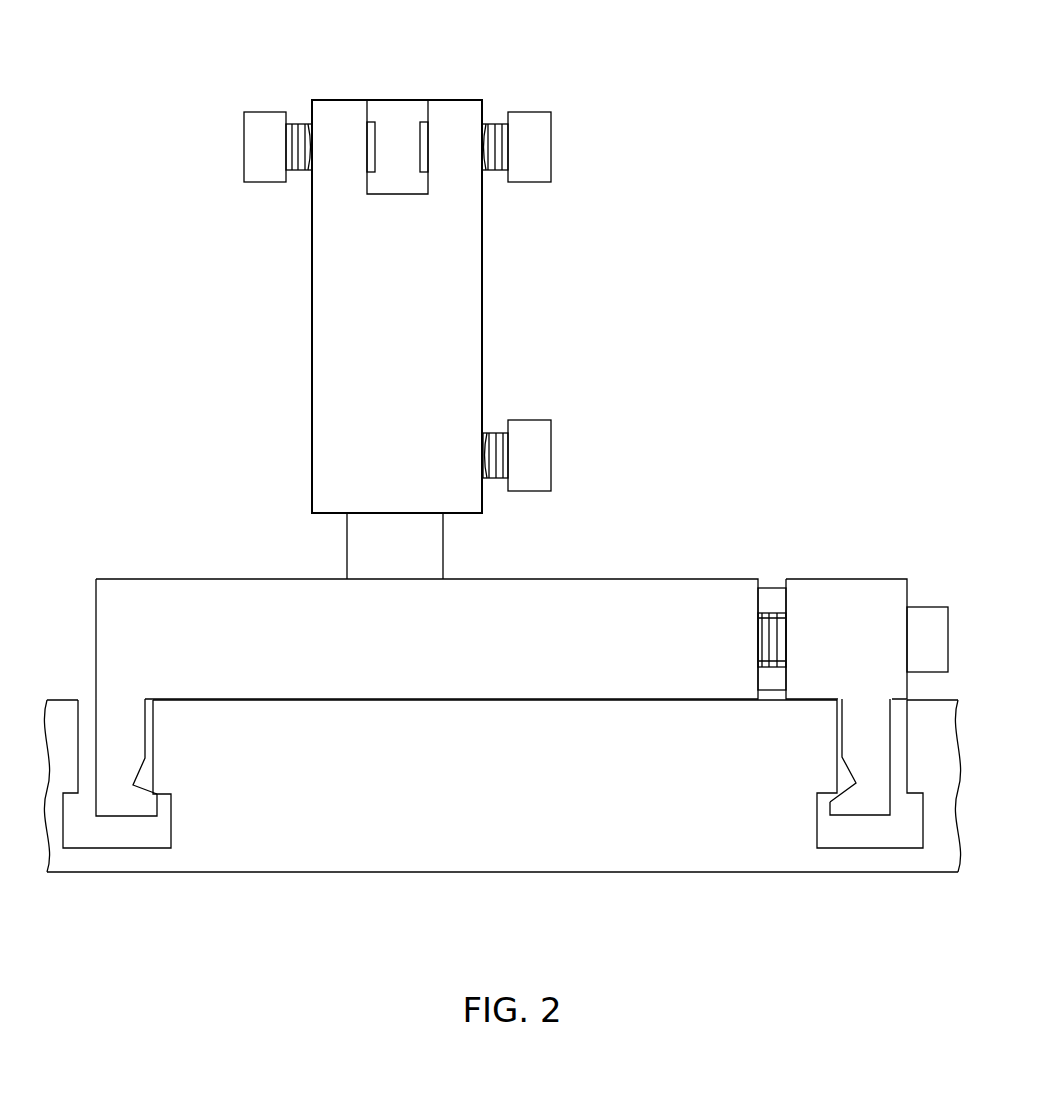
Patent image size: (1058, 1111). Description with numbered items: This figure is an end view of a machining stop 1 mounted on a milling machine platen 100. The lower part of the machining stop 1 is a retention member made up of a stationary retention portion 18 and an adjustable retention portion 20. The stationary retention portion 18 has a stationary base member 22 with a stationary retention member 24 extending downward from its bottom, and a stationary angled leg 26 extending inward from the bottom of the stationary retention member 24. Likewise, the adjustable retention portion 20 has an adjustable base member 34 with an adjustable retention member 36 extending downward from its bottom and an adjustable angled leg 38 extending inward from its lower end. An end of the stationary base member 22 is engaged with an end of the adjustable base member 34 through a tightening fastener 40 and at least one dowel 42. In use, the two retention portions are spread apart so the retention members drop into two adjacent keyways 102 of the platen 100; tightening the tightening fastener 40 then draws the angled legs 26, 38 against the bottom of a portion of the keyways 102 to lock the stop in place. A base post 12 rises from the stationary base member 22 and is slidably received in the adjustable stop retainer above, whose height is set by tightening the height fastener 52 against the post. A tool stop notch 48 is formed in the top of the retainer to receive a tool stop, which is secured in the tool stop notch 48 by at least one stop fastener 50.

The machining stop 1 is at (148, 145).
The base post 12 is at (360, 542).
The stationary retention portion 18 is at (404, 671).
The adjustable retention portion 20 is at (821, 714).
The stationary base member 22 is at (112, 644).
The stationary retention member 24 is at (112, 737).
The stationary angled leg 26 is at (138, 805).
The adjustable base member 34 is at (876, 667).
The adjustable retention member 36 is at (875, 790).
The adjustable angled leg 38 is at (845, 802).
The tightening fastener 40 is at (925, 607).
The dowel 42 is at (772, 683).
The tool stop notch 48 is at (423, 110).
The stop fastener 50 is at (551, 146).
The height fastener 52 is at (551, 455).
The milling machine platen 100 is at (339, 873).
The keyways 102 is at (114, 850).